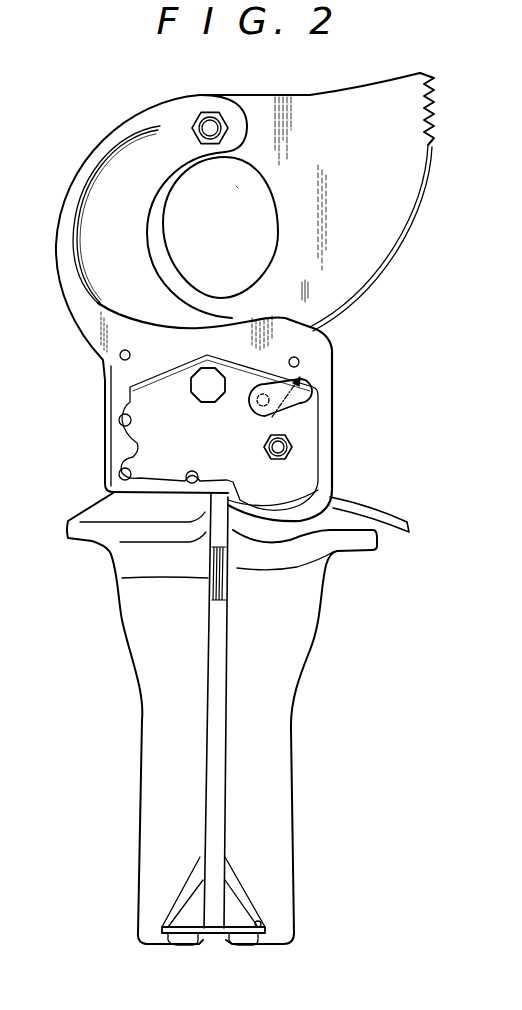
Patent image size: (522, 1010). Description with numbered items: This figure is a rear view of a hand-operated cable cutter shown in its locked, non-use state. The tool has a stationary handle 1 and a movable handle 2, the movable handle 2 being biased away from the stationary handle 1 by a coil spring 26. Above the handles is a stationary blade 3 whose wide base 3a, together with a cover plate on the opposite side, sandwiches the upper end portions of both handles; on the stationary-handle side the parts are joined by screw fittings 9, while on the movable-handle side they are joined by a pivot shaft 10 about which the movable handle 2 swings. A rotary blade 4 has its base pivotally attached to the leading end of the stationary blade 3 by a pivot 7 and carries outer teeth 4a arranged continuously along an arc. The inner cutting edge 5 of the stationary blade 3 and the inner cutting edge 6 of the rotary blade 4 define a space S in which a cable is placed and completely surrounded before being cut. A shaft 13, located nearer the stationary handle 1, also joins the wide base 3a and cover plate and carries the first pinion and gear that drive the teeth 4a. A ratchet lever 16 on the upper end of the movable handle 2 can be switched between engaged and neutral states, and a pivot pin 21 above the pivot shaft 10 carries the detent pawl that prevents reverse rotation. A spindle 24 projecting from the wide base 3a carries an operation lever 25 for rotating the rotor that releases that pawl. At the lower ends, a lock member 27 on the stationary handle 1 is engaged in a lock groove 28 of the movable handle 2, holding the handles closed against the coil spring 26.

The stationary handle 1 is at (155, 697).
The movable handle 2 is at (275, 690).
The stationary blade 3 is at (97, 245).
The wide base 3a is at (150, 447).
The rotary blade 4 is at (390, 192).
The outer teeth 4a is at (437, 122).
The inner cutting edge 5 is at (165, 243).
The inner cutting edge 6 is at (270, 240).
The pivot 7 is at (210, 113).
The screw fittings 9 is at (119, 418).
The pivot shaft 10 is at (293, 443).
The shaft 13 is at (192, 383).
The ratchet lever 16 is at (397, 523).
The pivot pin 21 is at (300, 358).
The spindle 24 is at (269, 401).
The operation lever 25 is at (307, 398).
The coil spring 26 is at (128, 578).
The lock member 27 is at (213, 934).
The lock groove 28 is at (265, 940).
The space S is at (237, 187).